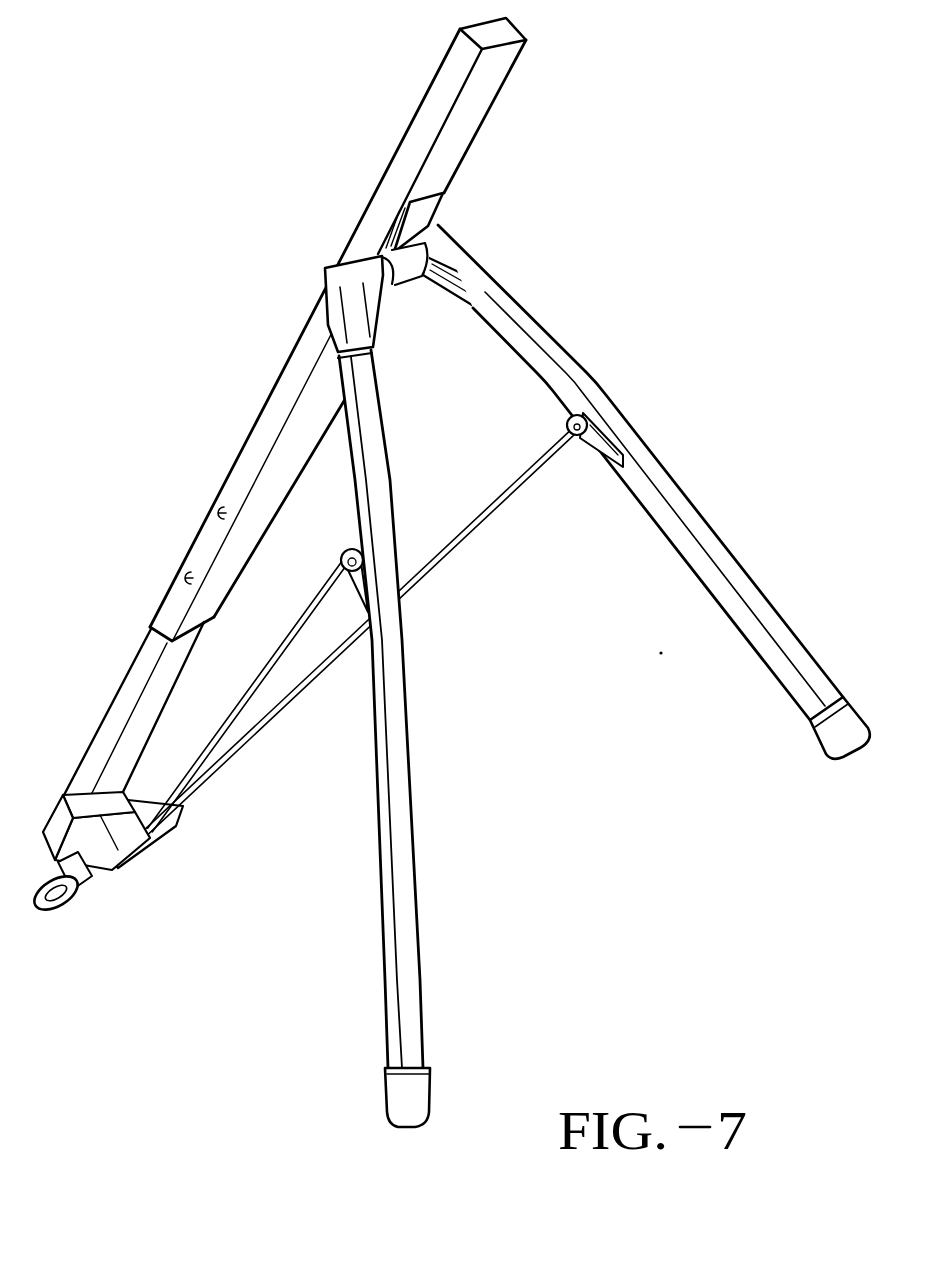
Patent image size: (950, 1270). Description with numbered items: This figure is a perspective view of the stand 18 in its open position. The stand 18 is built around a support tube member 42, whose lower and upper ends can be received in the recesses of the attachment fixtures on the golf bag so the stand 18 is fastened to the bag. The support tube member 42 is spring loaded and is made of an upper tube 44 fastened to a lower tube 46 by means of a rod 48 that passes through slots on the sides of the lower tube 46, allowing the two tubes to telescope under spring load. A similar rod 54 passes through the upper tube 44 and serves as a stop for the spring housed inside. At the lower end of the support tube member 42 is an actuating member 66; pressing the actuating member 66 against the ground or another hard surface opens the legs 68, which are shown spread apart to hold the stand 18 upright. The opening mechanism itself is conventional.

The stand 18 is at (468, 640).
The support tube member 42 is at (258, 360).
The upper tube 44 is at (248, 462).
The lower tube 46 is at (136, 683).
The rod 48 is at (181, 578).
The rod 54 is at (212, 513).
The actuating member 66 is at (50, 913).
The legs 68 is at (770, 648).